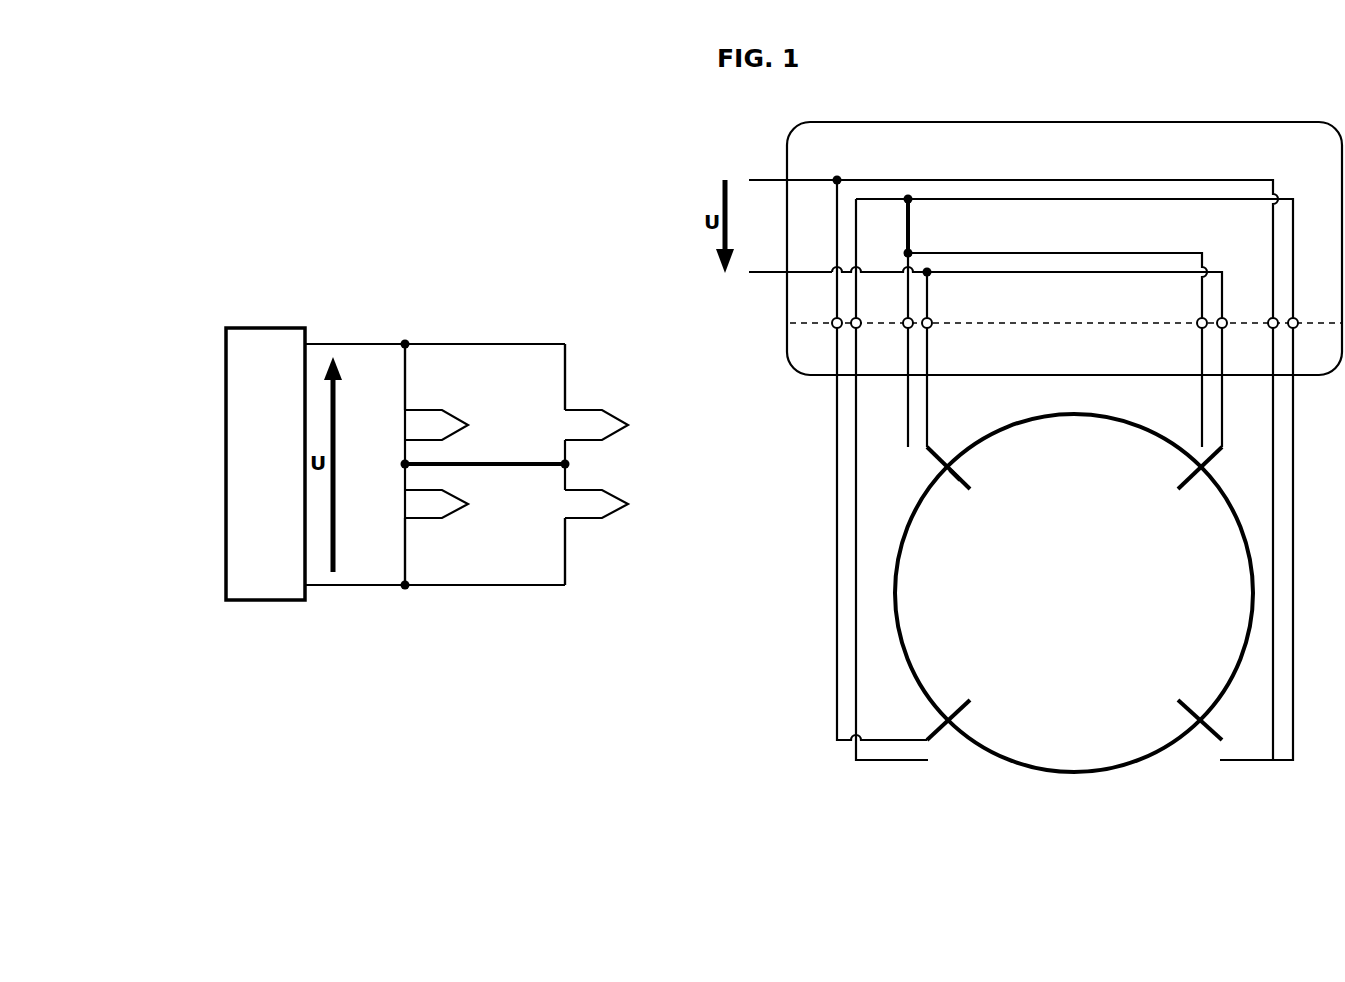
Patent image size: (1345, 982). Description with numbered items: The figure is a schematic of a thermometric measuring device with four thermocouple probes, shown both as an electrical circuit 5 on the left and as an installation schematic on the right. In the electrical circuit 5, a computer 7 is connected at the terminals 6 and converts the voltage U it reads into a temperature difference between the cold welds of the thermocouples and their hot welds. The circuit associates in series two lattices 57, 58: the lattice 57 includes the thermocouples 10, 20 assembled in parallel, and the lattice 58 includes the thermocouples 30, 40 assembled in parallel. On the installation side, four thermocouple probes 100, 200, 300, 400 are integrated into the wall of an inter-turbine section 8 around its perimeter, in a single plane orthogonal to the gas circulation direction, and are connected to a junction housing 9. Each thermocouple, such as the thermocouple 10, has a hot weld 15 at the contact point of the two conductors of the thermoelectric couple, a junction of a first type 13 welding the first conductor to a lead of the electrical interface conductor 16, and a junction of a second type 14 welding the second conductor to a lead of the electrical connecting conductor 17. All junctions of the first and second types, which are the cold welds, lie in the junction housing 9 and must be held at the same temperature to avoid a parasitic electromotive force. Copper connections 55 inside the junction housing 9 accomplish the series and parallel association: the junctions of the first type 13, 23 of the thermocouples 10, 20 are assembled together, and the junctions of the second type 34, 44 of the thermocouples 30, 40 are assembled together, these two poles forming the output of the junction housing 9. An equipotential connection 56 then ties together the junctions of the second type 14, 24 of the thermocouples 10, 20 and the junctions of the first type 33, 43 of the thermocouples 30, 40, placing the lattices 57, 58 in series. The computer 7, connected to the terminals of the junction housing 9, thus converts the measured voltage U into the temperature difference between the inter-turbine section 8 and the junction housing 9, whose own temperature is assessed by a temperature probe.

The electrical circuit 5 is at (468, 280).
The terminals 6 is at (355, 344).
The computer 7 is at (256, 474).
The inter-turbine section 8 is at (1066, 604).
The junction housing 9 is at (1066, 166).
The thermocouple 10 is at (452, 425).
The junction of a first type 13 is at (929, 329).
The junction of a second type 14 is at (905, 318).
The hot weld 15 is at (967, 492).
The electrical interface conductor 16 is at (928, 304).
The electrical connecting conductor 17 is at (904, 292).
The thermocouple 20 is at (612, 425).
The junction of a first type 23 is at (1224, 318).
The junction of a second type 24 is at (1200, 329).
The thermocouple 30 is at (452, 504).
The junction of a first type 33 is at (1295, 318).
The junction of a second type 34 is at (1271, 329).
The thermocouple 40 is at (612, 504).
The junction of a first type 43 is at (858, 329).
The junction of a second type 44 is at (834, 318).
The copper connections 55 is at (1160, 180).
The equipotential connection 56 is at (913, 228).
The lattice 57 is at (488, 372).
The lattice 58 is at (487, 554).
The thermocouple probe 100 is at (969, 480).
The thermocouple probe 200 is at (1178, 480).
The thermocouple probe 300 is at (1178, 708).
The thermocouple probe 400 is at (969, 708).